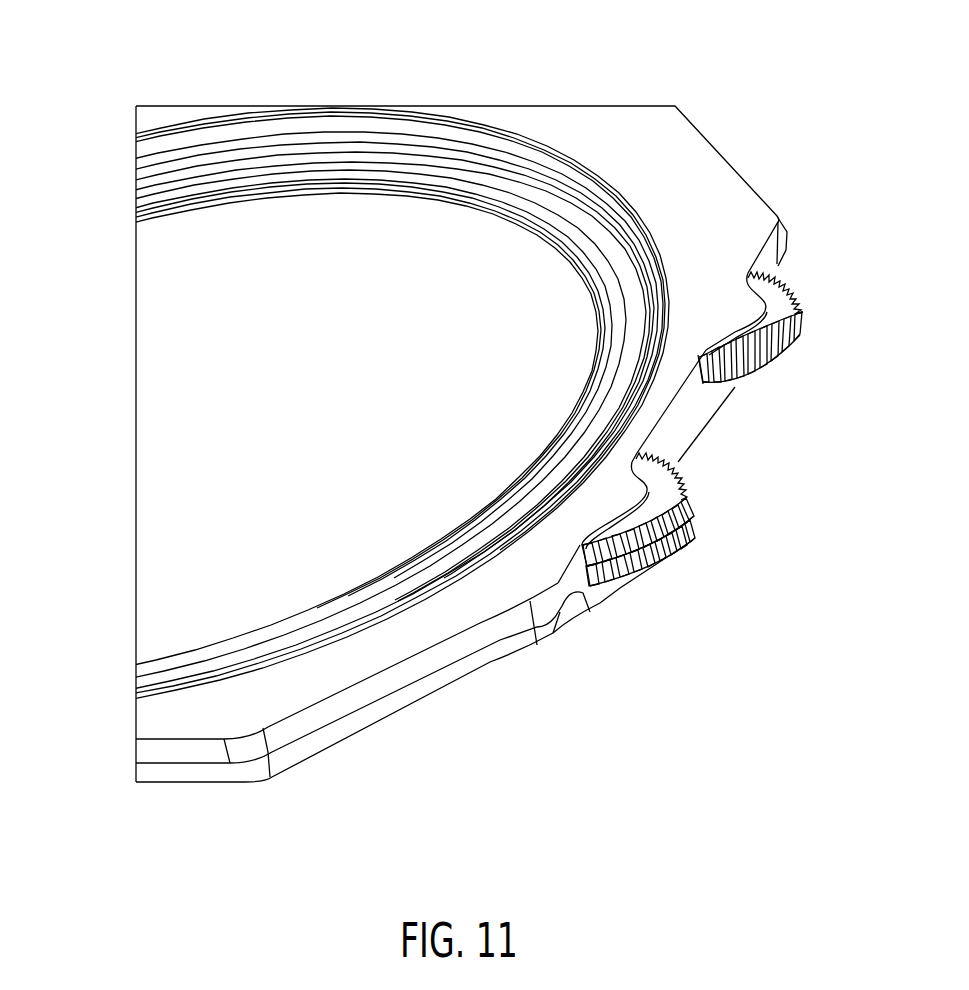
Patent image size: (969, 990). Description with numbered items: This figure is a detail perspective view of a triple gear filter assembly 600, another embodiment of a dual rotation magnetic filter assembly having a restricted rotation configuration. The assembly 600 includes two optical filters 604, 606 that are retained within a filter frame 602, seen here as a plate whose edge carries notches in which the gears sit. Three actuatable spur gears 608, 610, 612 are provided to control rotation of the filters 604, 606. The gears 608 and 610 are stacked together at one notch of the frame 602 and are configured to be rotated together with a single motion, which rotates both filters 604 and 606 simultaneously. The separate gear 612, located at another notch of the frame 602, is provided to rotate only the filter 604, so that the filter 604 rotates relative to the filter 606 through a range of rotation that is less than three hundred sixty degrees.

The triple gear filter assembly 600 is at (107, 90).
The filter frame 602 is at (725, 152).
The optical filter 604 is at (283, 146).
The optical filter 606 is at (453, 198).
The spur gear 608 is at (688, 505).
The spur gear 610 is at (692, 540).
The spur gear 612 is at (804, 327).